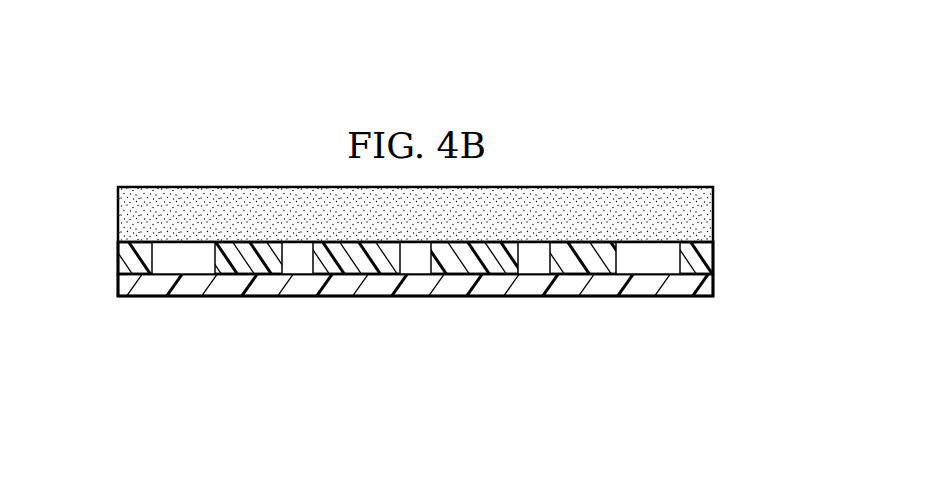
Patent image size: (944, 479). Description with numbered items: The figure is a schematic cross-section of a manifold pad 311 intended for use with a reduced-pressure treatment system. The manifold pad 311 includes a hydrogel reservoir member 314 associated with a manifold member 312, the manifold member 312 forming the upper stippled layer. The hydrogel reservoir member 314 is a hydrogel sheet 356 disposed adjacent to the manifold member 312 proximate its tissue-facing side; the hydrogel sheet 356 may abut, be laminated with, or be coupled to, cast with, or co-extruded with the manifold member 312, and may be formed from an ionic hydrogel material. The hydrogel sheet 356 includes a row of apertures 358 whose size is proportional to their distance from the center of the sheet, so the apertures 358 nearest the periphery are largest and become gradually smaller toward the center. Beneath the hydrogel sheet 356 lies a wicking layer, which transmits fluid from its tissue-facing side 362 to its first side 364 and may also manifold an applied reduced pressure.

The manifold pad 311 is at (235, 157).
The manifold member 312 is at (650, 194).
The hydrogel reservoir member 314 is at (112, 250).
The hydrogel sheet 356 is at (127, 270).
The apertures 358 is at (185, 265).
The tissue-facing side 362 is at (700, 297).
The first side 364 is at (698, 273).